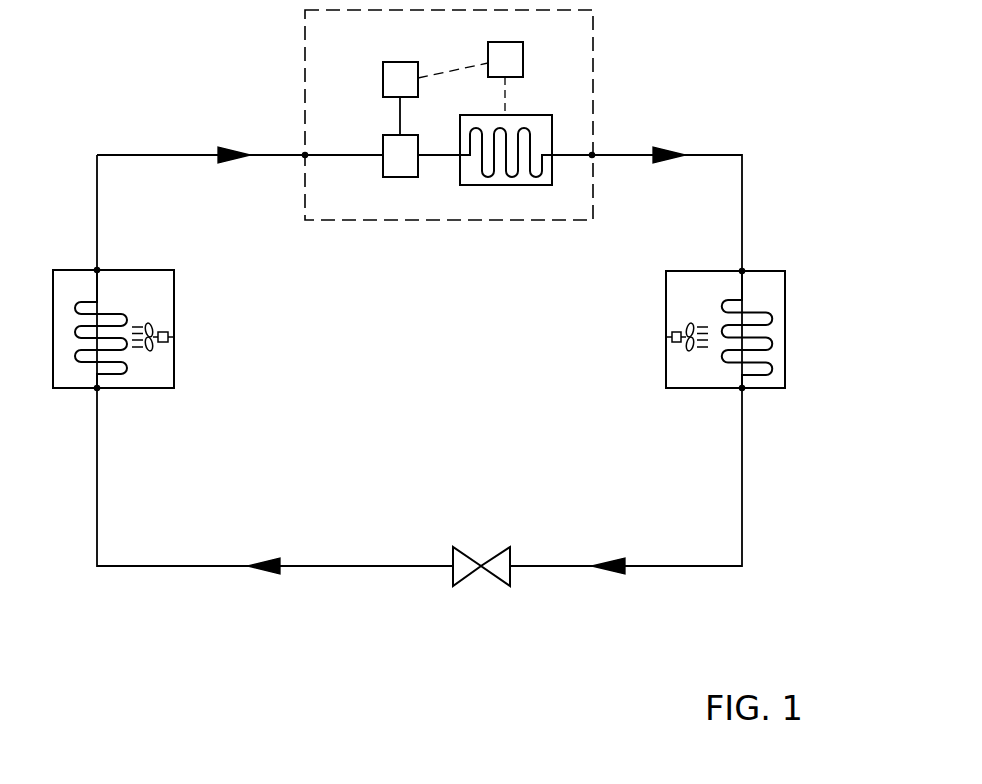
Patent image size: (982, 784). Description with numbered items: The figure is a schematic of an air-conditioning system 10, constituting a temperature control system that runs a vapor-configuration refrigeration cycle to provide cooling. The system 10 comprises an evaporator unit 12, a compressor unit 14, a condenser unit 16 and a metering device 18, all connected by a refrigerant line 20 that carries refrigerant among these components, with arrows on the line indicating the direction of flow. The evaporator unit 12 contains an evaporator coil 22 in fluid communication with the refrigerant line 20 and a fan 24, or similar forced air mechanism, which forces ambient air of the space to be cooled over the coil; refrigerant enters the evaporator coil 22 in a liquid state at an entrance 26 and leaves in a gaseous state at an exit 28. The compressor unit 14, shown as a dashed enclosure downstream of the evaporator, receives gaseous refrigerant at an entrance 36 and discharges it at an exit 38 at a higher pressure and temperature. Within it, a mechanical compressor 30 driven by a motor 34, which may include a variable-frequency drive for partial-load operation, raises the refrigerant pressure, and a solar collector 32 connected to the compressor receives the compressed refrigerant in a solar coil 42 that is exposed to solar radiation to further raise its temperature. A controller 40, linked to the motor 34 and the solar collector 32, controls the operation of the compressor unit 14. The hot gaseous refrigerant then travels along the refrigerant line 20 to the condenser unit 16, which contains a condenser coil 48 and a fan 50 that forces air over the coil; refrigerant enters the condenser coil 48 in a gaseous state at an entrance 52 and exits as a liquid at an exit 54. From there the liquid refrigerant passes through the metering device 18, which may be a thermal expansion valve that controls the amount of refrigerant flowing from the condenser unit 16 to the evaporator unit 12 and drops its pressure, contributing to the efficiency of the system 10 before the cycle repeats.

The air-conditioning system 10 is at (748, 98).
The evaporator unit 12 is at (174, 293).
The compressor unit 14 is at (593, 48).
The condenser unit 16 is at (785, 338).
The metering device 18 is at (460, 547).
The refrigerant line 20 is at (135, 155).
The evaporator coil 22 is at (91, 300).
The fan 24 is at (174, 337).
The entrance 26 is at (97, 388).
The exit 28 is at (97, 270).
The mechanical compressor 30 is at (400, 177).
The solar collector 32 is at (518, 149).
The motor 34 is at (383, 78).
The entrance 36 is at (305, 155).
The exit 38 is at (592, 155).
The controller 40 is at (523, 60).
The solar coil 42 is at (523, 130).
The condenser coil 48 is at (735, 300).
The fan 50 is at (666, 337).
The entrance 52 is at (742, 271).
The exit 54 is at (742, 388).